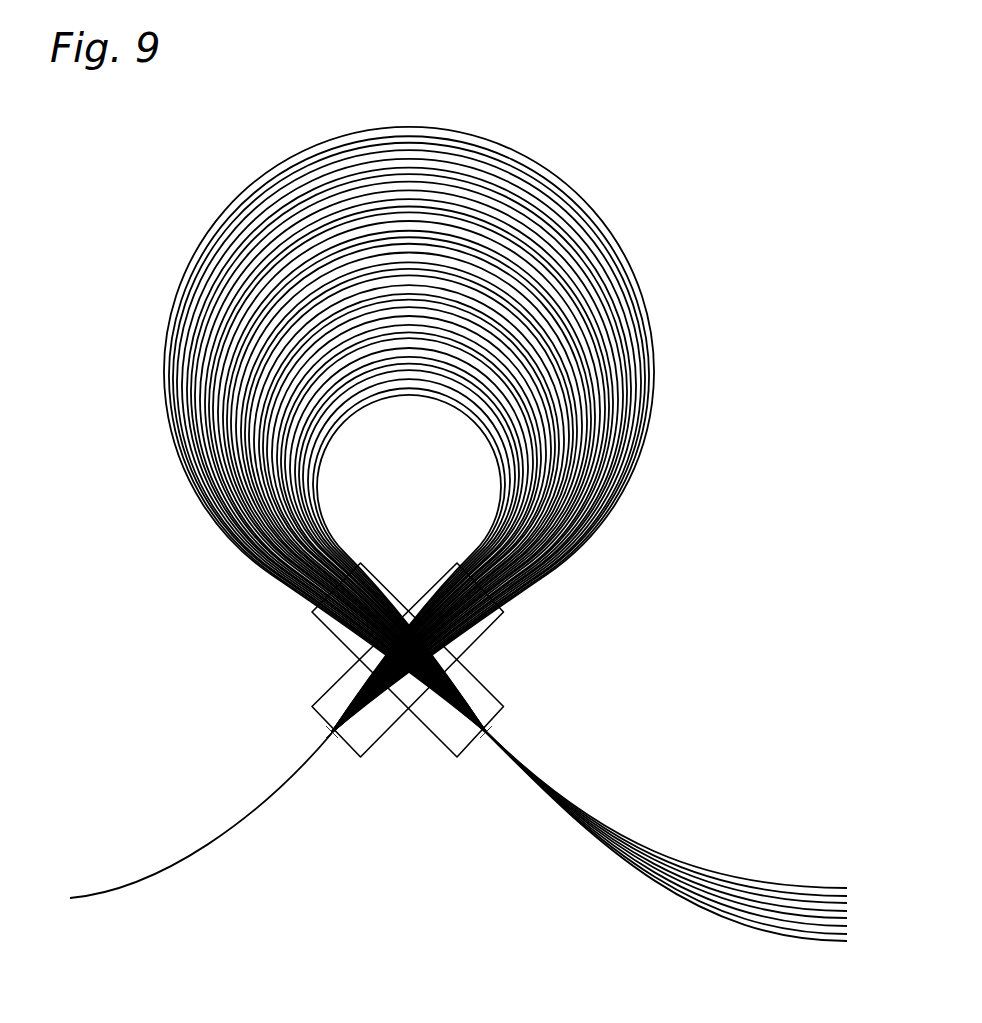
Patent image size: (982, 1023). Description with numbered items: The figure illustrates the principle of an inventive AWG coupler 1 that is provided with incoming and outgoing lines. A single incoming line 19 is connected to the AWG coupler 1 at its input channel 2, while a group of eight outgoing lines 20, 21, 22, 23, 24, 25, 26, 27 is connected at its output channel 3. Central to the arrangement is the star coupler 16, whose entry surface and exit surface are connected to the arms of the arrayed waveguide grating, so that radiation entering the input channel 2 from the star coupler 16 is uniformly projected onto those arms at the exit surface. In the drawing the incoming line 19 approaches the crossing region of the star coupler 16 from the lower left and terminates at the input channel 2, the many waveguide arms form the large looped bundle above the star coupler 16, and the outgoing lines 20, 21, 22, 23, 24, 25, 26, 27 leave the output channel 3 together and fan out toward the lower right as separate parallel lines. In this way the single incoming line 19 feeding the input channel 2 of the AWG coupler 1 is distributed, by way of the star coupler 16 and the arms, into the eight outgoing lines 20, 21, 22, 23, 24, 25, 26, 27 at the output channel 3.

The AWG coupler 1 is at (566, 172).
The input channel 2 is at (332, 733).
The output channel 3 is at (487, 733).
The star coupler 16 is at (336, 675).
The incoming line 19 is at (219, 838).
The outgoing line 20 is at (623, 837).
The outgoing line 21 is at (694, 875).
The outgoing line 22 is at (748, 893).
The outgoing line 23 is at (798, 910).
The outgoing line 24 is at (663, 888).
The outgoing line 25 is at (718, 908).
The outgoing line 26 is at (785, 930).
The outgoing line 27 is at (842, 942).